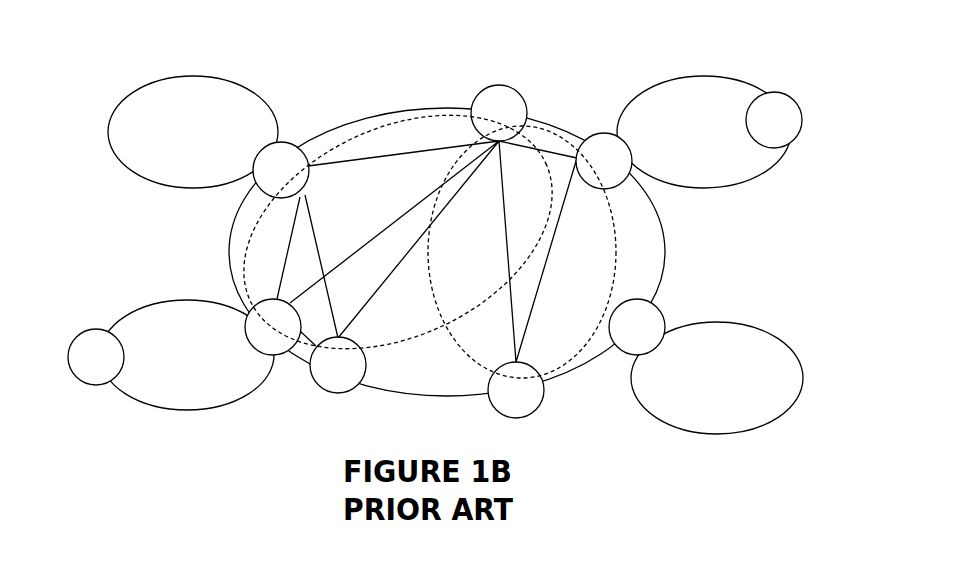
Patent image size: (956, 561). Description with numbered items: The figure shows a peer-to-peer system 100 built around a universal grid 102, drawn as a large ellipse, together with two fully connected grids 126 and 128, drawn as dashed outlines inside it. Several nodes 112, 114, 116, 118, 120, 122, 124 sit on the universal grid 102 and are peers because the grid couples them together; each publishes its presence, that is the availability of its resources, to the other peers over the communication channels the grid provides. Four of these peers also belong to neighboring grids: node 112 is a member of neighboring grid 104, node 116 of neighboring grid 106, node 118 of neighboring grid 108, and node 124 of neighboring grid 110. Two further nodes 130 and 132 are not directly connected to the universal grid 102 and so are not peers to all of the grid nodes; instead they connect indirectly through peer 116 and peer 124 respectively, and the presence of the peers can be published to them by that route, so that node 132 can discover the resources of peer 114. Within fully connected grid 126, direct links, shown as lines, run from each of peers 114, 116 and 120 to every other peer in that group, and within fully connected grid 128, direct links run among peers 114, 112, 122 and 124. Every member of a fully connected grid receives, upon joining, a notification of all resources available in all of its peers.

The peer-to-peer system 100 is at (452, 250).
The first grid 102 is at (227, 243).
The neighboring grid 104 is at (178, 184).
The neighboring grid 106 is at (690, 188).
The neighboring grid 108 is at (708, 434).
The neighboring grid 110 is at (160, 410).
The node 112 is at (272, 198).
The node 114 is at (505, 85).
The node 116 is at (607, 133).
The node 118 is at (659, 308).
The node 120 is at (545, 397).
The node 122 is at (338, 393).
The node 124 is at (293, 305).
The fully connected grid 126 is at (458, 345).
The fully connected grid 128 is at (415, 112).
The node 130 is at (802, 118).
The node 132 is at (124, 355).